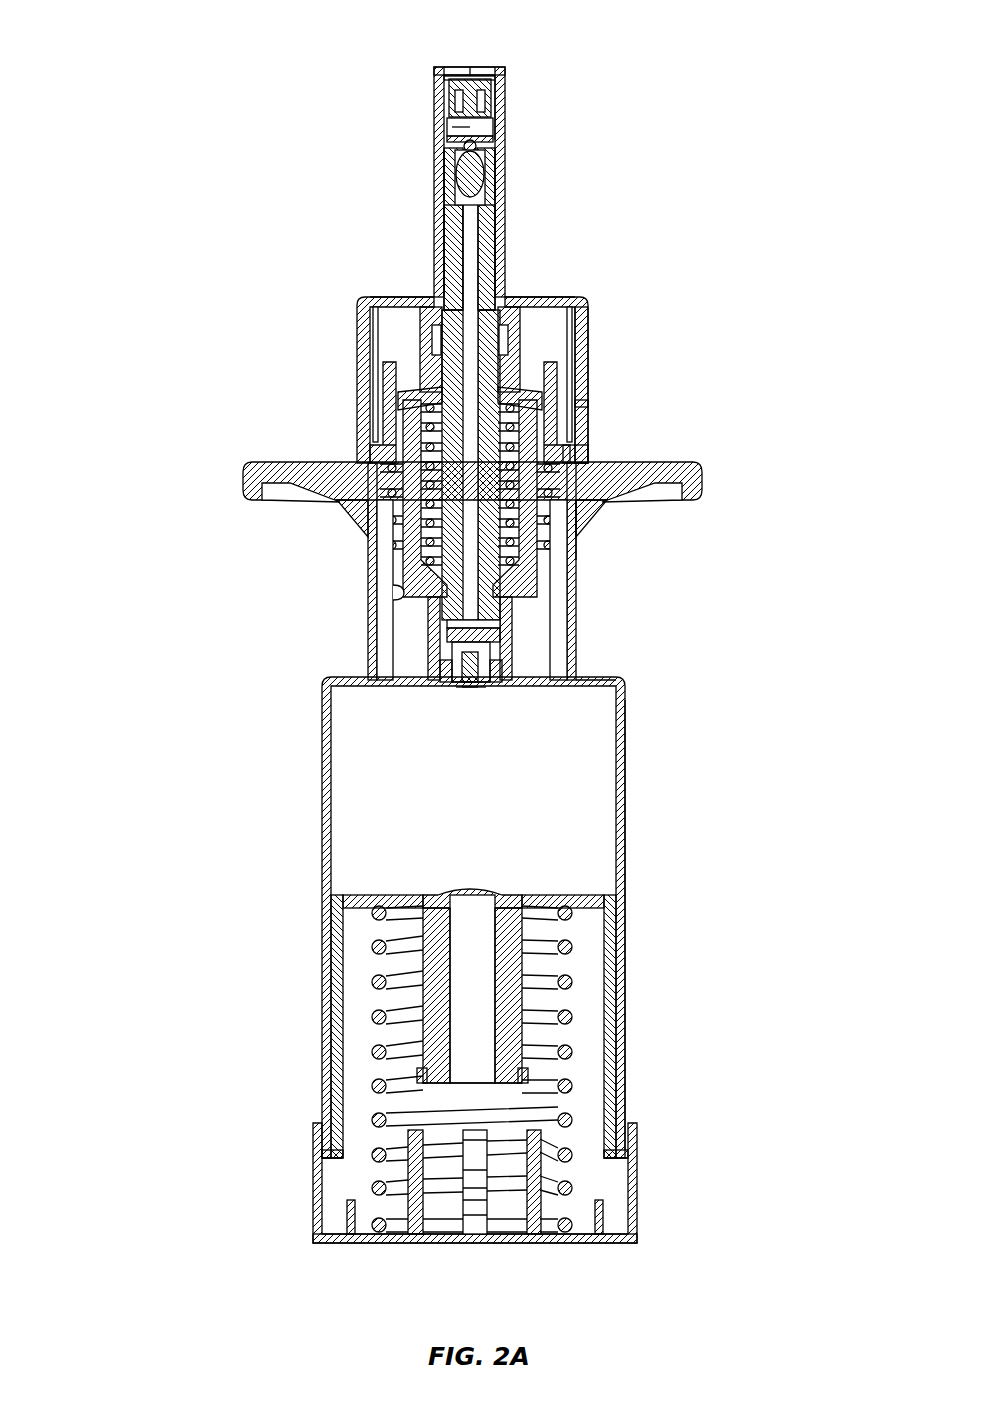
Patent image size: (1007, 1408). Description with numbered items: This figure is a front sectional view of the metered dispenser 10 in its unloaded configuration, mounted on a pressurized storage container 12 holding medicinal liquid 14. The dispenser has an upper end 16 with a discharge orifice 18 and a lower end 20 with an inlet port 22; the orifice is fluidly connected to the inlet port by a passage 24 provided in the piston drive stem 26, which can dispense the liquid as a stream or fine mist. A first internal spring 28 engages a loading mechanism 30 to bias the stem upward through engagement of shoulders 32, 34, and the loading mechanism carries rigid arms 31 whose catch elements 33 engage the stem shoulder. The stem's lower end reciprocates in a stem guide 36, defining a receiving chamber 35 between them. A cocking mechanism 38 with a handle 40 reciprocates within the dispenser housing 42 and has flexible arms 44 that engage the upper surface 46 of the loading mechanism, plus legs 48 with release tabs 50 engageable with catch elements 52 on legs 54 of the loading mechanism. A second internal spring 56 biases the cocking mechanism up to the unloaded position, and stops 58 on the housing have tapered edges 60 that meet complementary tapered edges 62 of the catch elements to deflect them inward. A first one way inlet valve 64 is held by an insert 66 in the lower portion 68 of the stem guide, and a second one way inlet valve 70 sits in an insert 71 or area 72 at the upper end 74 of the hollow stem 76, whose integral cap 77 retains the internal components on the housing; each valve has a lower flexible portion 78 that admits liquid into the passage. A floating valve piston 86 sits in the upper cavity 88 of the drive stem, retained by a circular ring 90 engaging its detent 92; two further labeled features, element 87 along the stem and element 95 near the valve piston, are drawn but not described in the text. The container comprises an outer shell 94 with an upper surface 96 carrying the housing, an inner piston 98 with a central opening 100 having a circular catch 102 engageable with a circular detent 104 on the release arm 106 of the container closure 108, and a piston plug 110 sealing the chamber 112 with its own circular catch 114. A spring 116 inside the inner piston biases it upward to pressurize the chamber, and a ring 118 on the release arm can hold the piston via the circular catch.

The metered dispenser 10 is at (218, 210).
The pressurized storage container 12 is at (322, 812).
The medicinal liquid 14 is at (492, 757).
The upper end 16 is at (500, 70).
The discharge orifice 18 is at (470, 67).
The lower end 20 is at (472, 690).
The inlet port 22 is at (462, 684).
The passage 24 is at (470, 262).
The piston drive stem 26 is at (490, 228).
The first internal spring 28 is at (505, 650).
The loading mechanism 30 is at (510, 345).
The rigid arms 31 is at (420, 332).
The shoulder 32 is at (400, 395).
The catch elements 33 is at (410, 305).
The shoulder 34 is at (515, 335).
The receiving chamber 35 is at (500, 623).
The stem guide 36 is at (420, 640).
The cocking mechanism 38 is at (572, 538).
The handle 40 is at (700, 480).
The dispenser housing 42 is at (530, 662).
The flexible arms 44 is at (580, 405).
The upper surface 46 is at (376, 340).
The legs 48 is at (408, 535).
The release tabs 50 is at (393, 565).
The catch elements 52 is at (535, 562).
The legs 54 is at (568, 432).
The second internal spring 56 is at (395, 490).
The stops 58 is at (393, 596).
The tapered edge 60 is at (428, 606).
The tapered edge 62 is at (520, 592).
The first one way inlet valve 64 is at (505, 668).
The insert 66 is at (460, 668).
The lower portion 68 is at (440, 668).
The second one way inlet valve 70 is at (448, 126).
The insert 71 is at (500, 95).
The area 72 is at (452, 88).
The upper end 74 is at (440, 76).
The hollow stem 76 is at (434, 252).
The cap 77 is at (576, 370).
The lower flexible portion 78 is at (470, 687).
The floating valve piston 86 is at (444, 185).
The rod wall 87 is at (446, 220).
The upper cavity 88 is at (484, 176).
The circular ring 90 is at (495, 138).
The detent 92 is at (452, 168).
The outer shell 94 is at (622, 778).
The small ball 95 is at (464, 146).
The upper surface 96 is at (576, 676).
The inner piston 98 is at (362, 895).
The central opening 100 is at (522, 962).
The circular catch 102 is at (418, 1076).
The circular detent 104 is at (420, 1180).
The release arm 106 is at (640, 1160).
The container closure 108 is at (368, 1243).
The piston plug 110 is at (490, 888).
The chamber 112 is at (498, 823).
The circular catch 114 is at (522, 1098).
The spring 116 is at (572, 1012).
The ring 118 is at (335, 1165).